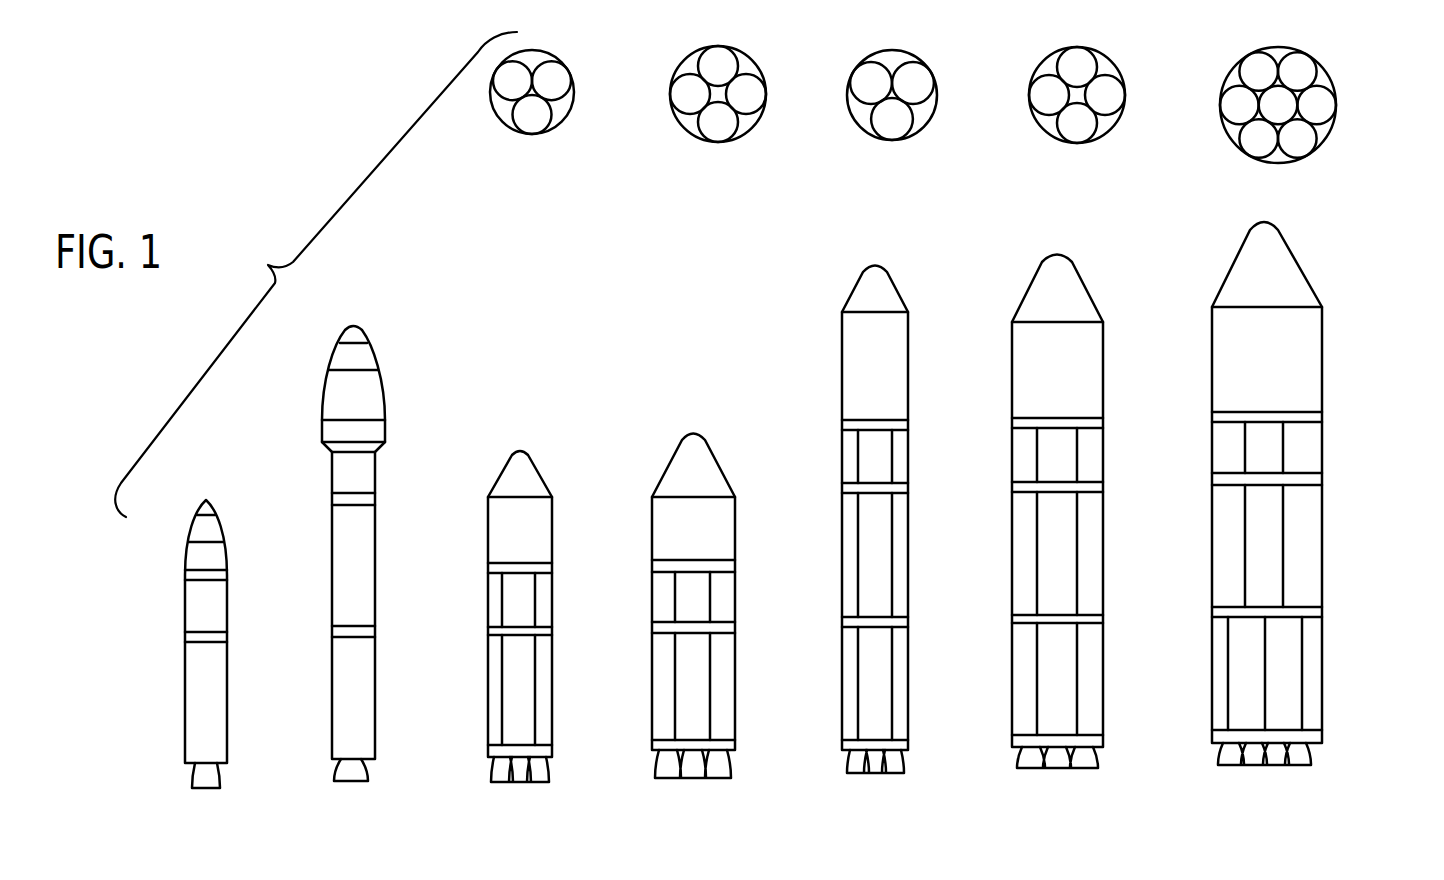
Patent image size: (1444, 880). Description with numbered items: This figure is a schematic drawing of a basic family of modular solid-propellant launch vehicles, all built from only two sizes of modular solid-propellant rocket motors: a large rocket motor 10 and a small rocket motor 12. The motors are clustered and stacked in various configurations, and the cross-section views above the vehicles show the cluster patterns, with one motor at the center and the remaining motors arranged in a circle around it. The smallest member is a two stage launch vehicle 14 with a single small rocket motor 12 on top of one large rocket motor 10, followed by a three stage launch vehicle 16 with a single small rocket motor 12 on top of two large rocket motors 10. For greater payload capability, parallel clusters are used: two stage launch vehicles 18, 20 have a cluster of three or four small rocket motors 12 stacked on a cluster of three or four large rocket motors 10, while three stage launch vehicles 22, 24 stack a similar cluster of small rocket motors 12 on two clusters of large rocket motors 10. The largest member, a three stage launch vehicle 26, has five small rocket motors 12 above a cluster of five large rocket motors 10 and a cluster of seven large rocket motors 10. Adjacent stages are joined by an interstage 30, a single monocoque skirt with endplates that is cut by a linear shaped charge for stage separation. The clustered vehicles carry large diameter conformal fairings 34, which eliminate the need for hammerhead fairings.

The large rocket motor 10 is at (561, 76).
The small rocket motor 12 is at (227, 604).
The two stage launch vehicle 14 is at (235, 519).
The three stage launch vehicle 16 is at (393, 410).
The two stage launch vehicle 18 is at (549, 460).
The two stage launch vehicle 20 is at (740, 460).
The three stage launch vehicle 22 is at (921, 419).
The three stage launch vehicle 24 is at (1113, 403).
The three stage launch vehicle 26 is at (1335, 385).
The interstage 30 is at (185, 576).
The conformal fairing 34 is at (190, 545).